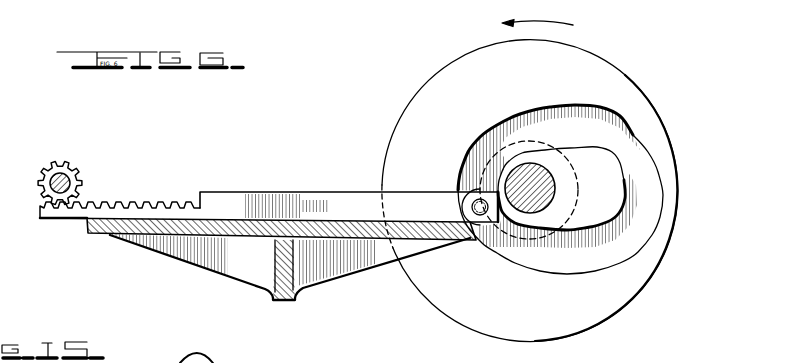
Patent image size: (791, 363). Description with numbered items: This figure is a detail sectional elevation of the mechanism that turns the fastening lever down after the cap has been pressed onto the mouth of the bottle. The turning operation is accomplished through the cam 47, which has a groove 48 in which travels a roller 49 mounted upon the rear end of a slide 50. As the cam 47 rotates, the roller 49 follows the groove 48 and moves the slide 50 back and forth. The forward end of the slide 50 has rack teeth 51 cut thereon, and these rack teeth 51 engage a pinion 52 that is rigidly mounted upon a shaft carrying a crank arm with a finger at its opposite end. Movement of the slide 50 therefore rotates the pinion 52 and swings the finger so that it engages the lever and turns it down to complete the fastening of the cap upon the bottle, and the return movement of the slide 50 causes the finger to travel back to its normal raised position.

The cam 47 is at (530, 181).
The groove 48 is at (560, 189).
The roller 49 is at (457, 180).
The slide 50 is at (278, 195).
The rack teeth 51 is at (138, 202).
The pinion 52 is at (73, 172).